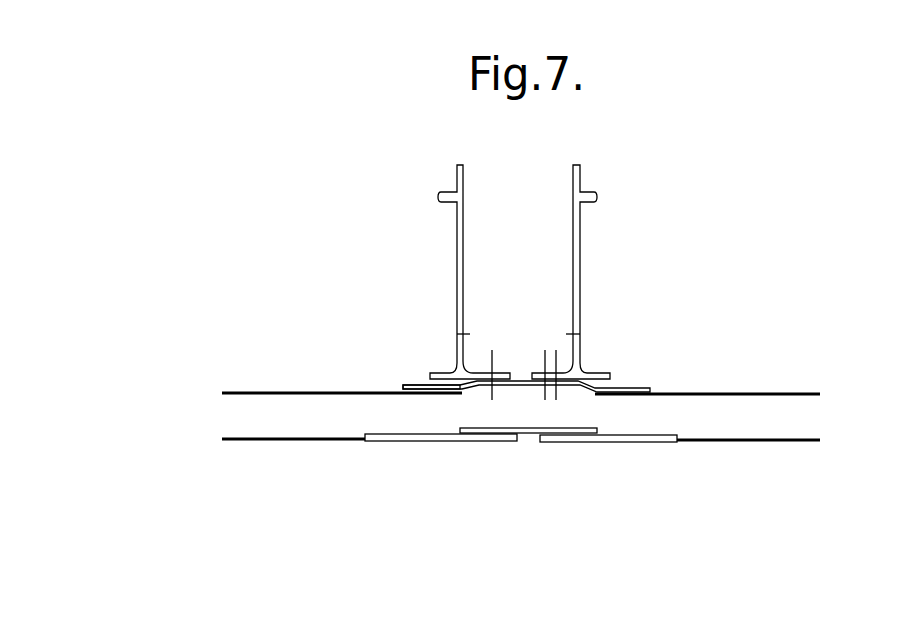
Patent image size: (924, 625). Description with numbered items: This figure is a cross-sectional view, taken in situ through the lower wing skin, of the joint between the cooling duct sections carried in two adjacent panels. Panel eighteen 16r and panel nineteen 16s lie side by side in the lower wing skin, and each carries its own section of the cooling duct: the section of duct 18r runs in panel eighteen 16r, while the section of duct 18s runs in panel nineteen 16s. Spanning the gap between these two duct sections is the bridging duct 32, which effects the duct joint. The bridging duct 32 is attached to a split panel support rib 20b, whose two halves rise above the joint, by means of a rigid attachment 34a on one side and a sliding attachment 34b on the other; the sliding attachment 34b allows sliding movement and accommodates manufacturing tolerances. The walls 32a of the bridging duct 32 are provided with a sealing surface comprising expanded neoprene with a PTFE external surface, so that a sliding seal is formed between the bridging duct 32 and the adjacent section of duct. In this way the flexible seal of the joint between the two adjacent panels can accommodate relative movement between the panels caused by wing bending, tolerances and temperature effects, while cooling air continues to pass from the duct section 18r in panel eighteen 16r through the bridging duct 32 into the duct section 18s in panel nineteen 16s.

The panel support rib 20b is at (573, 238).
The panel nineteen 16s is at (248, 414).
The panel eighteen 16r is at (813, 415).
The section of duct 18s is at (288, 445).
The section of duct 18r is at (712, 393).
The bridging duct 32 is at (591, 391).
The walls of the bridging duct 32a is at (480, 436).
The rigid attachment 34a is at (490, 360).
The sliding attachment 34b is at (544, 360).